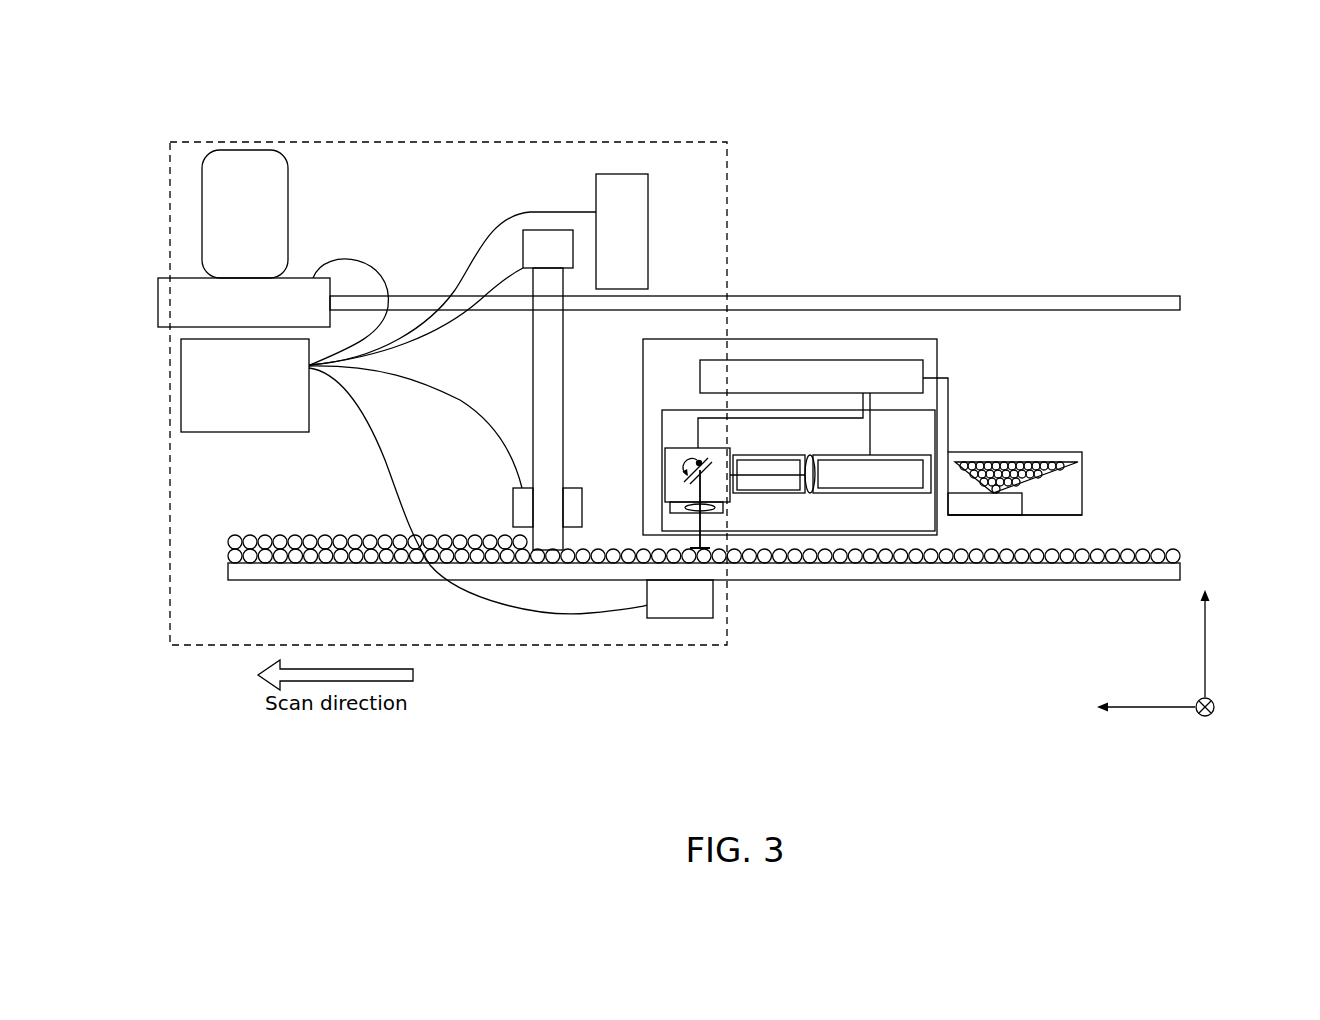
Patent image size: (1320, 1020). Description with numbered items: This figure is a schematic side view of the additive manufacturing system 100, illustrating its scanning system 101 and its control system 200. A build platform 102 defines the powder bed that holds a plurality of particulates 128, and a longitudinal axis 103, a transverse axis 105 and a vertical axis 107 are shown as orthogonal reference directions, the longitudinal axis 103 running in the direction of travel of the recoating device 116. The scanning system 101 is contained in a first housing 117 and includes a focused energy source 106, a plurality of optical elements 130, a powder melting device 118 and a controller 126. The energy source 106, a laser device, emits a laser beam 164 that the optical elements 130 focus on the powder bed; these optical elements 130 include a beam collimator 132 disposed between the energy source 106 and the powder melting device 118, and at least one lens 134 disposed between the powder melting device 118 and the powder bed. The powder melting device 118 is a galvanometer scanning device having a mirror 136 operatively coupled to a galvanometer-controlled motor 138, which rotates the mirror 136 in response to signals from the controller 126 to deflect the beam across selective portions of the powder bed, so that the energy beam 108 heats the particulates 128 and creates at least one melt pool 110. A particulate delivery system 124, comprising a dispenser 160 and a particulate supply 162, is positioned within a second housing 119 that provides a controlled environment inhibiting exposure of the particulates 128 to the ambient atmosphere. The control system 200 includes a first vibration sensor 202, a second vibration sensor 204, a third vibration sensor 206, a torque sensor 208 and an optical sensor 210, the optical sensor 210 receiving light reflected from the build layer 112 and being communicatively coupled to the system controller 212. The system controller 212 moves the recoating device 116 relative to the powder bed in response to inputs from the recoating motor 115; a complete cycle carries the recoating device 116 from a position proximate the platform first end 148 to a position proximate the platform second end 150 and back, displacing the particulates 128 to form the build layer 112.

The additive manufacturing system 100 is at (835, 80).
The scanning system 101 is at (942, 268).
The build platform 102 is at (808, 578).
The longitudinal axis 103 is at (1135, 712).
The transverse axis 105 is at (1203, 718).
The focused energy source 106 is at (895, 482).
The vertical axis 107 is at (1208, 640).
The energy beam 108 is at (705, 542).
The melt pool 110 is at (712, 560).
The build layer 112 is at (858, 562).
The recoating motor 115 is at (282, 165).
The recoating device 116 is at (545, 372).
The first housing 117 is at (937, 345).
The powder melting device 118 is at (930, 412).
The second housing 119 is at (1040, 453).
The particulate delivery system 124 is at (1068, 520).
The controller 126 is at (857, 375).
The particulates 128 is at (980, 458).
The optical elements 130 is at (770, 448).
The beam collimator 132 is at (836, 494).
The lens 134 is at (672, 512).
The mirror 136 is at (665, 485).
The galvanometer-controlled motor 138 is at (695, 452).
The platform first end 148 is at (1185, 525).
The platform second end 150 is at (213, 575).
The dispenser 160 is at (1003, 510).
The particulate supply 162 is at (1035, 480).
The laser beam 164 is at (800, 486).
The control system 200 is at (448, 142).
The first vibration sensor 202 is at (540, 238).
The second vibration sensor 204 is at (513, 505).
The third vibration sensor 206 is at (682, 620).
The torque sensor 208 is at (308, 250).
The optical sensor 210 is at (633, 240).
The system controller 212 is at (255, 432).